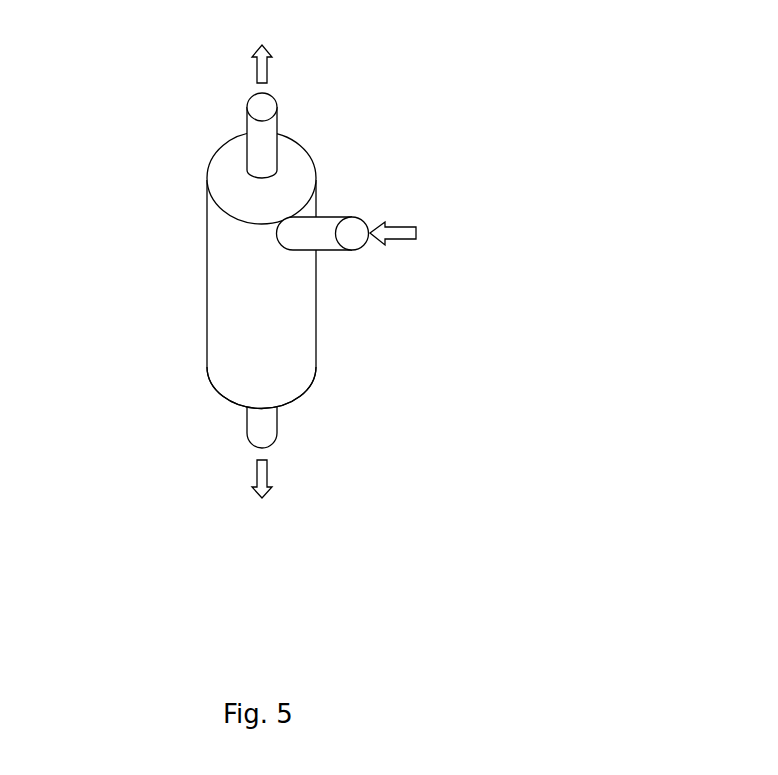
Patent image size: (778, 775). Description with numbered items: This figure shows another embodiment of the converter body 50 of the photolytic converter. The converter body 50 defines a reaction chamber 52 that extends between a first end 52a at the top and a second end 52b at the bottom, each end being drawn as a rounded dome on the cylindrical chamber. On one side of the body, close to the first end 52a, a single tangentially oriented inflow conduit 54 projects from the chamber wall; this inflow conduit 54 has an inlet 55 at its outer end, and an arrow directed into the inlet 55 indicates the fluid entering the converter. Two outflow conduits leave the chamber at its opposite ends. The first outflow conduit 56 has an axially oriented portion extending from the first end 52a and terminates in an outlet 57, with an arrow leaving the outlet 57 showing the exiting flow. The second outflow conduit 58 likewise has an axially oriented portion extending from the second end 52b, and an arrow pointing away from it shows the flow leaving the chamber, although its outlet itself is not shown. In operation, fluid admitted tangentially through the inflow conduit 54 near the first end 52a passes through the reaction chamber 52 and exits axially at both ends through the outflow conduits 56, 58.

The converter body 50 is at (338, 143).
The reaction chamber 52 is at (245, 291).
The first end 52a is at (228, 173).
The second end 52b is at (230, 402).
The inflow conduit 54 is at (376, 198).
The inlet 55 is at (353, 233).
The outflow conduit 56 is at (252, 95).
The outlet 57 is at (261, 110).
The outflow conduit 58 is at (247, 438).